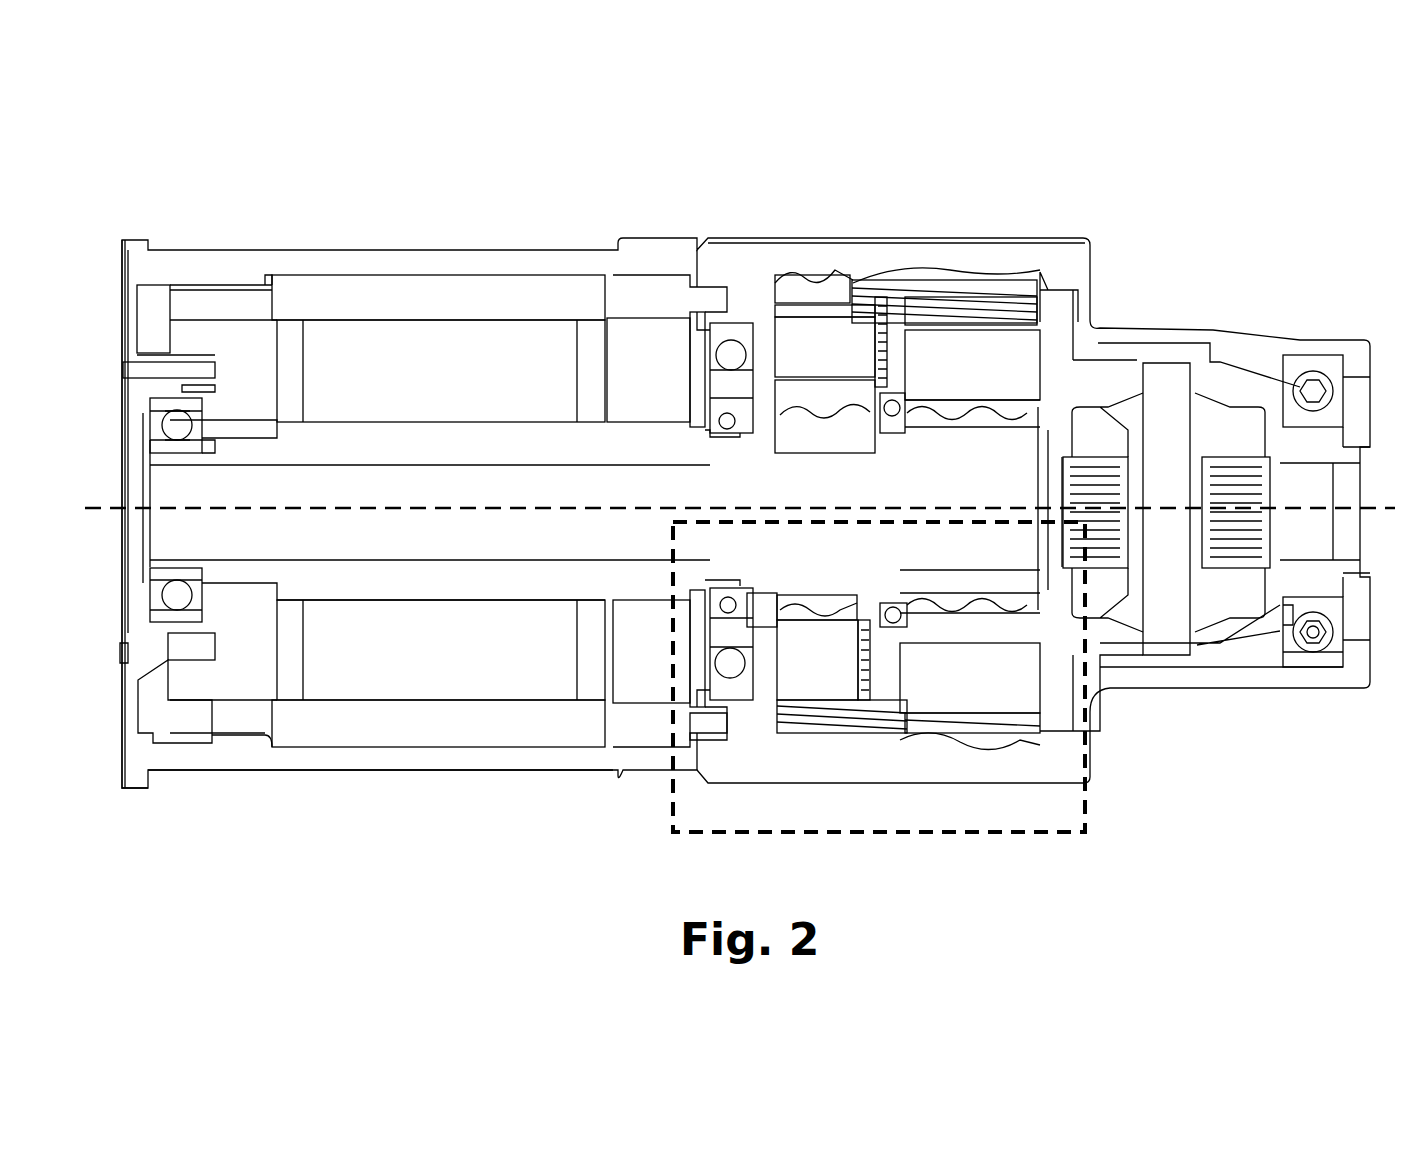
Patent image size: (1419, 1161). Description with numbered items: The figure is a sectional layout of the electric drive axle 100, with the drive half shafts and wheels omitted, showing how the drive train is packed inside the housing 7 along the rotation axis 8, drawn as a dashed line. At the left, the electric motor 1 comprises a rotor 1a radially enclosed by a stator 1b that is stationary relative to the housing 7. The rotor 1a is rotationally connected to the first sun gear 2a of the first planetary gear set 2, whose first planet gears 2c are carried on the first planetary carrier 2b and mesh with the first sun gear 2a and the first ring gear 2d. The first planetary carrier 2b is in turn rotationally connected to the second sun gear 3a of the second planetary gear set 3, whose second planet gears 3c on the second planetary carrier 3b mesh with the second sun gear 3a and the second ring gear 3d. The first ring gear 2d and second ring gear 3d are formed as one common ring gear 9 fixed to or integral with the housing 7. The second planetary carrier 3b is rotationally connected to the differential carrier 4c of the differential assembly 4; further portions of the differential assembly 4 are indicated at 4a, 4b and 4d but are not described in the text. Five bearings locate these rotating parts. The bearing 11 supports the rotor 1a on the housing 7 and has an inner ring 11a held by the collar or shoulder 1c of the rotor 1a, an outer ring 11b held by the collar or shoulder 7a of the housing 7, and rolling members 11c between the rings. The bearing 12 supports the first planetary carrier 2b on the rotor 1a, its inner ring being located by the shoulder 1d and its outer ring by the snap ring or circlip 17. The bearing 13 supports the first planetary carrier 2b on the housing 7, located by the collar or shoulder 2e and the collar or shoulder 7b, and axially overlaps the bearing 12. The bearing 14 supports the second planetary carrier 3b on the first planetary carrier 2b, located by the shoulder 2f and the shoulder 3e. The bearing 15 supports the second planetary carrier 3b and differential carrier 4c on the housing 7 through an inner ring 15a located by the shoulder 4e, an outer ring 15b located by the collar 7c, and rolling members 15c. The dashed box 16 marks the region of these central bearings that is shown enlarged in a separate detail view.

The electric drive axle 100 is at (445, 140).
The electric motor 1 is at (257, 787).
The rotor 1a is at (370, 422).
The stator 1b is at (383, 290).
The collar or shoulder 1c is at (205, 577).
The shoulder 1d is at (707, 433).
The first planetary gear set 2 is at (807, 165).
The first sun gear 2a is at (803, 430).
The first planetary carrier 2b is at (825, 508).
The first planet gears 2c is at (806, 288).
The first ring gear 2d is at (830, 265).
The collar or shoulder 2e is at (753, 647).
The shoulder 2f is at (875, 417).
The second planetary gear set 3 is at (962, 205).
The second sun gear 3a is at (930, 600).
The second planetary carrier 3b is at (970, 521).
The second planet gears 3c is at (967, 737).
The second ring gear 3d is at (1005, 755).
The shoulder 3e is at (896, 397).
The differential assembly 4 is at (1232, 258).
The first coupling hub flange 4a is at (1090, 427).
The second coupling hub 4b is at (1232, 433).
The differential carrier 4c is at (1208, 385).
The coupling hub flange 4d is at (1125, 598).
The shoulder 4e is at (1280, 605).
The housing 7 is at (385, 770).
The collar or shoulder 7a is at (147, 610).
The collar or shoulder 7b is at (697, 703).
The collar 7c is at (1345, 355).
The rotation axis 8 is at (490, 512).
The common ring gear 9 is at (1010, 255).
The bearing 11 is at (175, 393).
The inner ring 11a is at (202, 452).
The outer ring 11b is at (196, 406).
The rolling members 11c is at (180, 440).
The bearing 12 is at (732, 435).
The bearing 13 is at (693, 380).
The bearing 14 is at (893, 430).
The bearing 15 is at (1333, 722).
The inner ring 15a is at (1285, 620).
The outer ring 15b is at (1293, 662).
The rolling members 15c is at (1310, 648).
The dashed box 16 is at (673, 832).
The snap ring or circlip 17 is at (740, 630).